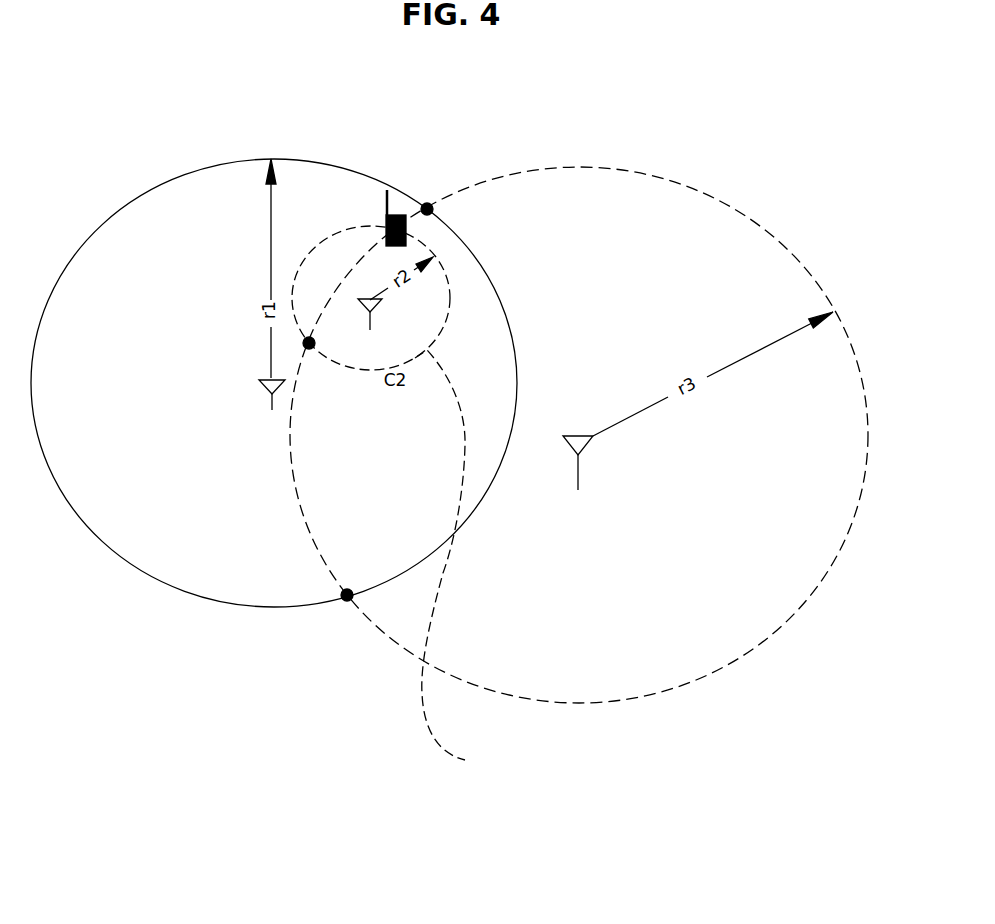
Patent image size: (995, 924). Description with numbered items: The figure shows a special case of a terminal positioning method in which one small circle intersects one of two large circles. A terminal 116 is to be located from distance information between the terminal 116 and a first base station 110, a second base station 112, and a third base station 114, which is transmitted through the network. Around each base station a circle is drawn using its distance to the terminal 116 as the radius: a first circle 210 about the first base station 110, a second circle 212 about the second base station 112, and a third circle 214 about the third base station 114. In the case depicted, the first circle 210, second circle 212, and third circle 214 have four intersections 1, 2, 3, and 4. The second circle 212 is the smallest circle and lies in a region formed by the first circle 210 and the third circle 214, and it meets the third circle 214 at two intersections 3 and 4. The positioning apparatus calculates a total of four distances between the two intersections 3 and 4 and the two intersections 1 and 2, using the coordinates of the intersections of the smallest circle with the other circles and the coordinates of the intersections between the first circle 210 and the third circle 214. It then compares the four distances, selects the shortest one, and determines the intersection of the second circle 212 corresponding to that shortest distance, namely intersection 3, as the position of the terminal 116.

The first base station 110 is at (256, 422).
The second base station 112 is at (392, 338).
The third base station 114 is at (597, 497).
The terminal 116 is at (406, 230).
The first circle 210 is at (148, 190).
The second circle 212 is at (465, 760).
The third circle 214 is at (762, 643).
The intersection 1 is at (426, 196).
The intersection 2 is at (344, 607).
The intersection 3 is at (386, 228).
The intersection 4 is at (310, 355).